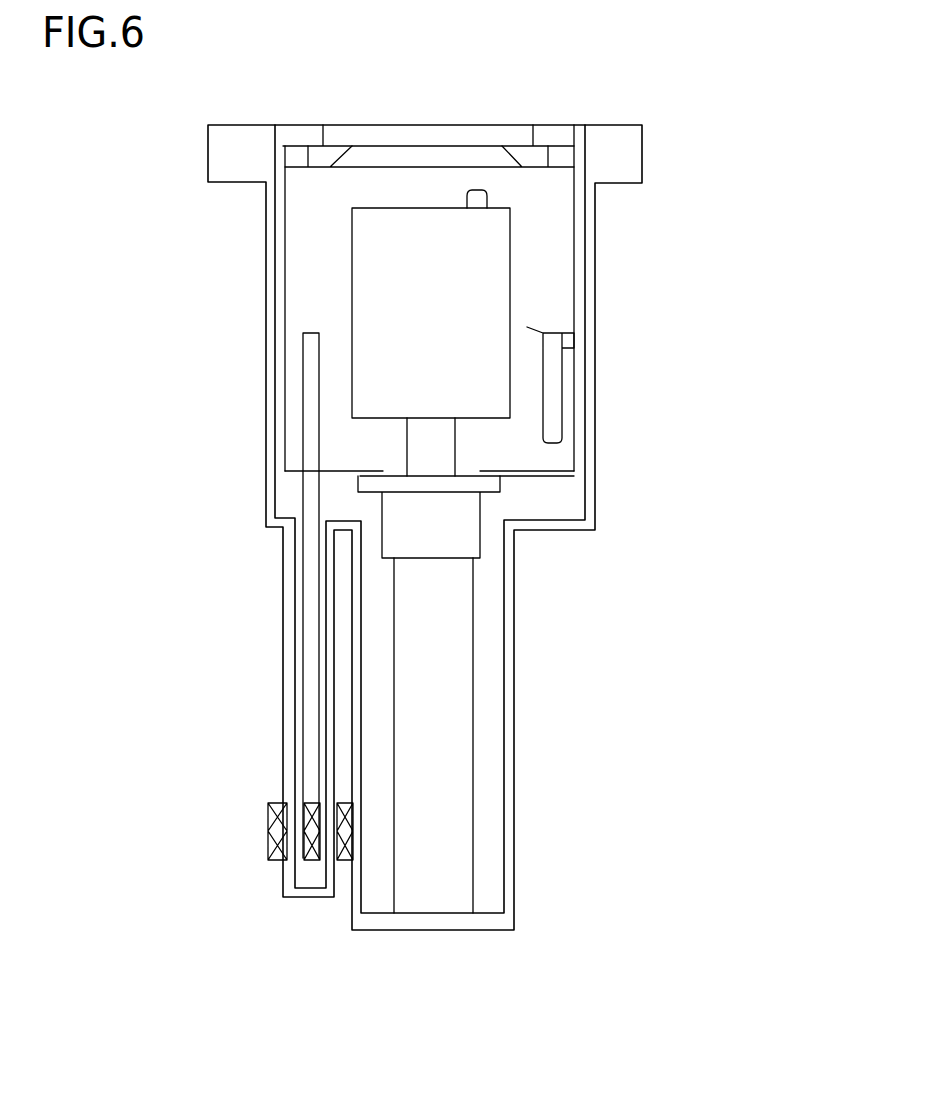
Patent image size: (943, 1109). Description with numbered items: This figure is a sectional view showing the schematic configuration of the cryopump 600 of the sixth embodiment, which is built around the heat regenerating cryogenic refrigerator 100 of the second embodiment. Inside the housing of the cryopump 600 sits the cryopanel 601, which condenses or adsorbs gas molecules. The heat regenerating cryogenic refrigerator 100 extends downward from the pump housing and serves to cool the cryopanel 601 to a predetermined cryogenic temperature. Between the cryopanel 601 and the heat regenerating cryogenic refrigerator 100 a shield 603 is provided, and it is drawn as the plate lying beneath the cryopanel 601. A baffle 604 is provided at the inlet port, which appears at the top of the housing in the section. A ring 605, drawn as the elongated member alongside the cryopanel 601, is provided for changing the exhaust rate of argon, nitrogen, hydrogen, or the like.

The cryopump 600 is at (647, 395).
The cryopanel 601 is at (488, 292).
The shield 603 is at (545, 476).
The baffle 604 is at (363, 169).
The ring 605 is at (333, 322).
The heat regenerating cryogenic refrigerator 100 is at (475, 715).